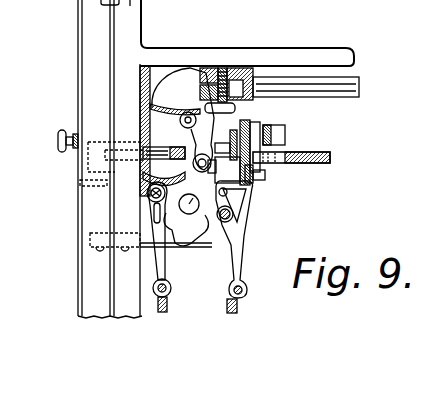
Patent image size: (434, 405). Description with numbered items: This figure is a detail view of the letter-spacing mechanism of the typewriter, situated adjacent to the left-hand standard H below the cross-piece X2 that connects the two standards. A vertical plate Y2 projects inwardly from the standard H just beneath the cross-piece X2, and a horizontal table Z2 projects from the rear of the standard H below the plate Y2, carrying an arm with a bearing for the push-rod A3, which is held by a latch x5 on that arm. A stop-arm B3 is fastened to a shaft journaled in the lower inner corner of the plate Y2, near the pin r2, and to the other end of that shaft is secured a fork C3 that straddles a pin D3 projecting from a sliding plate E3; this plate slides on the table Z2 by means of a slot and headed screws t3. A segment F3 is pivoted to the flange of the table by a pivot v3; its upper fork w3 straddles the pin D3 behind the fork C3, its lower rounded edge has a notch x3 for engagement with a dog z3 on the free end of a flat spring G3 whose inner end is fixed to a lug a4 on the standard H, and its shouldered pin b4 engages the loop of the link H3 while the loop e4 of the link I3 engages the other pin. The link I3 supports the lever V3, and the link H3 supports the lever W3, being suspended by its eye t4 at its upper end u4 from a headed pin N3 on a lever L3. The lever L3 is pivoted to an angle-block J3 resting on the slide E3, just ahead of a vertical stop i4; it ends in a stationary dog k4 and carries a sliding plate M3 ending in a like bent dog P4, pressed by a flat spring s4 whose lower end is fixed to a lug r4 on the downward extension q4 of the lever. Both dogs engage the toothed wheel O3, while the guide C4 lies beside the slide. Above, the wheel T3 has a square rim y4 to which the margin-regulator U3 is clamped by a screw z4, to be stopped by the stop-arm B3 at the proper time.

The standard H is at (123, 62).
The cross-piece X2 is at (305, 46).
The vertical plate Y2 is at (154, 66).
The stop-arm B3 is at (183, 119).
The pivot pin r2 is at (184, 115).
The fork C3 is at (183, 132).
The headed screws t3 is at (183, 160).
The pin D3 is at (144, 159).
The curved guide C4 is at (146, 193).
The sliding plate E3 is at (130, 134).
The knob x5 is at (72, 133).
The push-rod A3 is at (76, 152).
The horizontal plate or table Z2 is at (95, 183).
The lug a4 is at (90, 245).
The wheel O3 is at (147, 217).
The stationary dog k4 is at (300, 158).
The headed pin N3 is at (283, 149).
The pivot v3 is at (164, 191).
The fork w3 is at (192, 198).
The notch or indentation x3 is at (186, 229).
The loop e4 is at (173, 217).
The dog z3 is at (207, 230).
The flat spring G3 is at (187, 247).
The link I3 is at (155, 262).
The lever V3 is at (157, 302).
The link H3 is at (236, 276).
The lever W3 is at (250, 317).
The segment F3 is at (240, 248).
The shouldered pin b4 is at (232, 226).
The upper end of link u4 is at (250, 189).
The margin-regulator U3 is at (207, 67).
The clamping-screw z4 is at (222, 68).
The rim y4 is at (236, 72).
The wheel T3 is at (322, 84).
The angle-block J3 is at (248, 124).
The lever L3 is at (258, 124).
The sliding plate M3 is at (270, 128).
The bent dog P4 is at (285, 144).
The flat spring s4 is at (266, 172).
The lug r4 is at (266, 180).
The downward extension q4 is at (262, 188).
The vertical lug or stop i4 is at (222, 143).
The ring or eye t4 is at (224, 154).